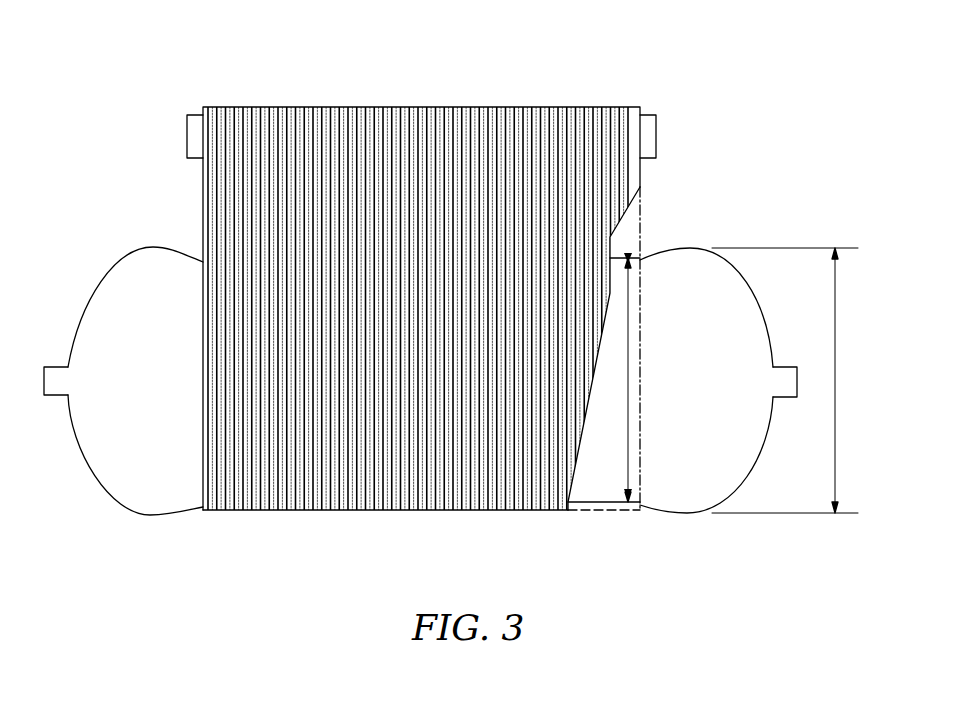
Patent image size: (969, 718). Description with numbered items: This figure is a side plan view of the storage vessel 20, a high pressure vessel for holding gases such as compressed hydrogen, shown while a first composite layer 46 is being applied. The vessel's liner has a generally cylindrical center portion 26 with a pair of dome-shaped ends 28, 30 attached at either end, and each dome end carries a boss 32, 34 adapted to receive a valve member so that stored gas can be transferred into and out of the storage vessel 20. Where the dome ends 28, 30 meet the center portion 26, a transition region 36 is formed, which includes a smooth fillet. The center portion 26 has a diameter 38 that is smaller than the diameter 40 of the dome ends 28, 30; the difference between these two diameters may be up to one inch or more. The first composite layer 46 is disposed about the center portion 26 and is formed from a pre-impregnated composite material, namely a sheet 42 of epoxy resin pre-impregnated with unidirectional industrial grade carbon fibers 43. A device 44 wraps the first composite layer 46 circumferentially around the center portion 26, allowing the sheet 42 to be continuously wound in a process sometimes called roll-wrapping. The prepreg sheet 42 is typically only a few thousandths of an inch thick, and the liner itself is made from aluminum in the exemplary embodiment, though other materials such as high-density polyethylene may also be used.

The storage vessel 20 is at (183, 82).
The center portion 26 is at (616, 250).
The dome-shaped end 28 is at (763, 448).
The dome-shaped end 30 is at (110, 495).
The boss 32 is at (783, 367).
The boss 34 is at (63, 367).
The transition region 36 is at (652, 510).
The diameter of center portion 38 is at (623, 462).
The diameter of dome ends 40 is at (837, 388).
The sheet 42 is at (202, 190).
The carbon fibers 43 is at (472, 137).
The device 44 is at (657, 138).
The first composite layer 46 is at (330, 510).